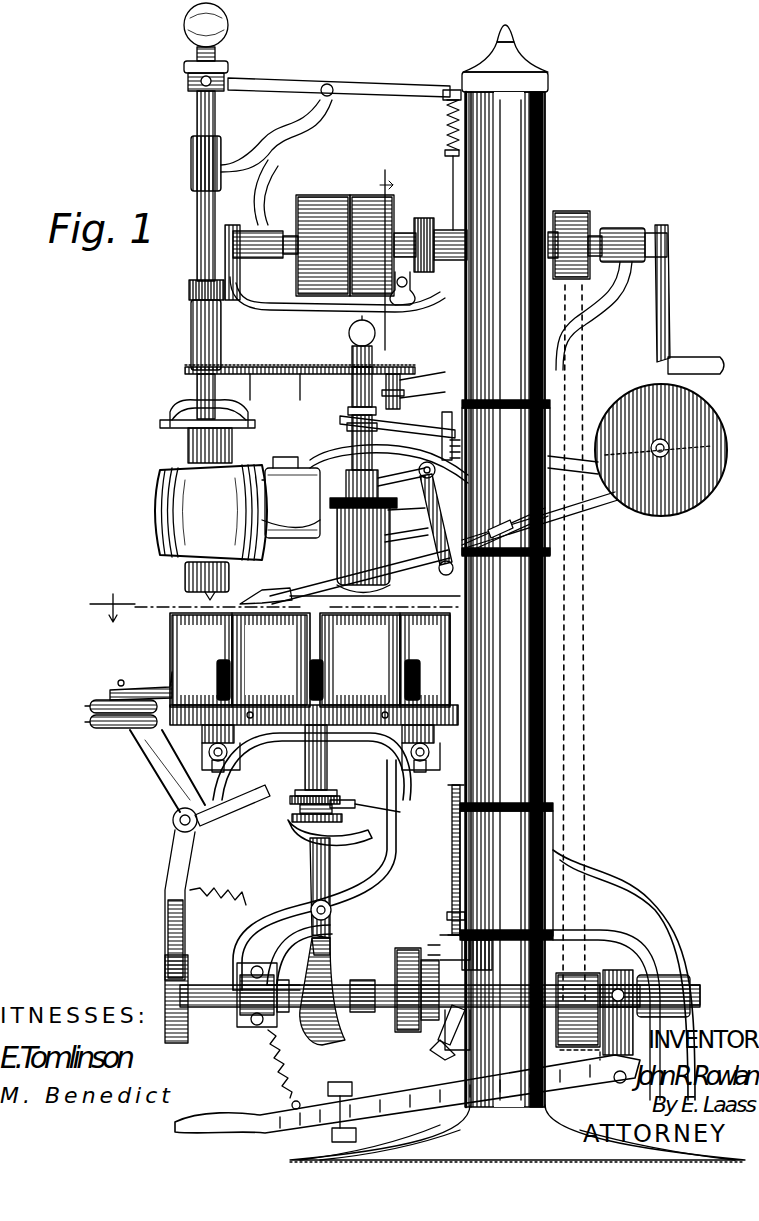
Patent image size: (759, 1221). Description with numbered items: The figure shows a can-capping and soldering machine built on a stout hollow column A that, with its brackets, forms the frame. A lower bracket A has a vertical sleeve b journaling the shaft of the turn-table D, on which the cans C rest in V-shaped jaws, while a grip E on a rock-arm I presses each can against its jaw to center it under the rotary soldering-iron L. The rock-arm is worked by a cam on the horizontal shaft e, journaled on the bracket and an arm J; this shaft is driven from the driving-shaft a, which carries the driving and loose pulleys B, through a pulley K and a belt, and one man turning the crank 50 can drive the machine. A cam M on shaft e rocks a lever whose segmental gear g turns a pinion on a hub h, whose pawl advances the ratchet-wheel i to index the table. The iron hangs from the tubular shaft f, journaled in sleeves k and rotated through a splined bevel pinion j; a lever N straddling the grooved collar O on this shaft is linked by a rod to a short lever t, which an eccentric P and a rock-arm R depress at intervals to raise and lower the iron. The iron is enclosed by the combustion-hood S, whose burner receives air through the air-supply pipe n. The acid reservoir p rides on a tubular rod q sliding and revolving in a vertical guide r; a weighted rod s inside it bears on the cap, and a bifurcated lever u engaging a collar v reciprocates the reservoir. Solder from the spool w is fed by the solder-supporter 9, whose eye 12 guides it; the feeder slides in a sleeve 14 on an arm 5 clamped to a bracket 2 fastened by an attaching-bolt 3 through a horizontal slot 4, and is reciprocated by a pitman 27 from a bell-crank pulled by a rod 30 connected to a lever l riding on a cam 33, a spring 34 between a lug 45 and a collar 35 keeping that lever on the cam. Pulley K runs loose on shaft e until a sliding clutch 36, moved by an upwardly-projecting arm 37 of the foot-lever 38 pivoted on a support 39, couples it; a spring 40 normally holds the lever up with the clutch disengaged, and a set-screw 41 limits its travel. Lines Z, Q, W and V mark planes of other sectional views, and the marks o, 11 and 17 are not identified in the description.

The column A is at (475, 648).
The drum B is at (291, 245).
The cylinder C is at (310, 660).
The guide D is at (329, 680).
The feed arm E is at (165, 680).
The lever I is at (165, 890).
The bracket arm J is at (624, 975).
The gear K is at (598, 1010).
The nozzle L is at (185, 578).
The cam M is at (320, 1045).
The lever N is at (400, 86).
The collar O is at (184, 80).
The gear P is at (400, 1030).
The rack Q is at (452, 885).
The bracket R is at (440, 948).
The barrel S is at (211, 512).
The bar V is at (395, 778).
The axis line W is at (390, 250).
The section line Z is at (275, 608).
The shaft a is at (400, 233).
The post b is at (305, 760).
The shaft e is at (368, 985).
The spindle f is at (197, 250).
The eccentric strap g is at (290, 830).
The collar h is at (300, 810).
The disc i is at (290, 800).
The collar j is at (189, 292).
The sleeve k is at (191, 170).
The collar l is at (320, 786).
The post n is at (419, 381).
The pawl o is at (428, 261).
The plunger p is at (363, 545).
The arm q is at (350, 443).
The link r is at (401, 483).
The ball s is at (362, 338).
The lever t is at (435, 1058).
The arm u is at (400, 431).
The rod v is at (348, 412).
The wheel w is at (661, 450).
The link 2 is at (436, 518).
The part 3 is at (354, 603).
The part 4 is at (406, 502).
The part 5 is at (406, 528).
The rod 9 is at (375, 603).
The part 11 is at (274, 575).
The part 12 is at (267, 593).
The rod 14 is at (504, 520).
The rod 17 is at (360, 577).
The part 27 is at (381, 603).
The rod 30 is at (462, 798).
The bracket 33 is at (475, 975).
The part 34 is at (452, 842).
The part 35 is at (452, 826).
The pulley 36 is at (640, 975).
The bracket 37 is at (618, 1012).
The treadle 38 is at (407, 1094).
The pivot 39 is at (580, 1049).
The spring 40 is at (278, 1072).
The bolt 41 is at (332, 1138).
The stop 45 is at (447, 915).
The crank 50 is at (670, 312).